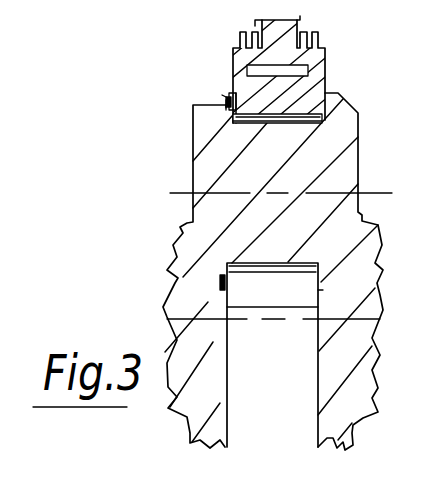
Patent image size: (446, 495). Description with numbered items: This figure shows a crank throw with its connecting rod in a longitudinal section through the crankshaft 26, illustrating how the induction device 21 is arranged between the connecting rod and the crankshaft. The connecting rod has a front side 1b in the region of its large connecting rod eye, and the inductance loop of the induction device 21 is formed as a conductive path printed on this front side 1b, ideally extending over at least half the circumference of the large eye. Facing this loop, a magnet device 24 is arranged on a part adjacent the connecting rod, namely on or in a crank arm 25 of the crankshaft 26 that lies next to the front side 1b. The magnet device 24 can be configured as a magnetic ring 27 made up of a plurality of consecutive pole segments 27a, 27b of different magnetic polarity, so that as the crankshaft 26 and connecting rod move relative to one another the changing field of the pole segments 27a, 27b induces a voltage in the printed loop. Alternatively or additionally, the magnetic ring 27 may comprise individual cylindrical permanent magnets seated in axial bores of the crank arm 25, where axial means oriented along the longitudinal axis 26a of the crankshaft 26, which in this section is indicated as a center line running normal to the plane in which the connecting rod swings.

The front side of the connecting rod 1b is at (236, 66).
The induction device 21 is at (276, 123).
The magnet device 24 is at (213, 107).
The crank arm 25 is at (228, 97).
The crankshaft 26 is at (183, 230).
The longitudinal axis of the crankshaft 26a is at (307, 323).
The magnetic ring 27 is at (228, 97).
The pole segment 27a is at (222, 283).
The pole segment 27b is at (227, 106).